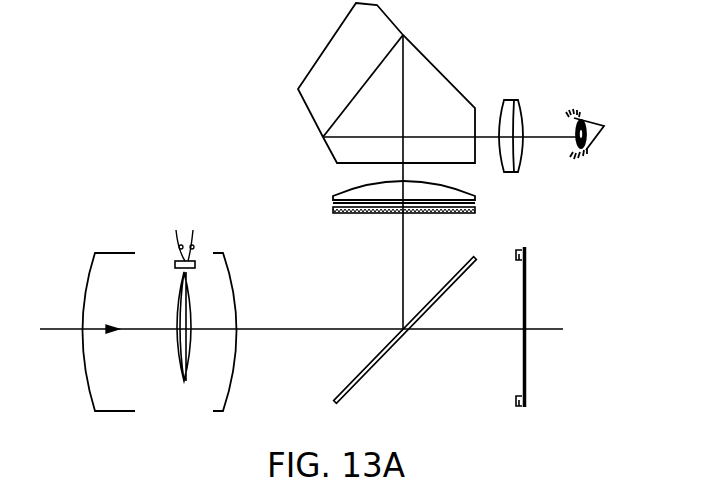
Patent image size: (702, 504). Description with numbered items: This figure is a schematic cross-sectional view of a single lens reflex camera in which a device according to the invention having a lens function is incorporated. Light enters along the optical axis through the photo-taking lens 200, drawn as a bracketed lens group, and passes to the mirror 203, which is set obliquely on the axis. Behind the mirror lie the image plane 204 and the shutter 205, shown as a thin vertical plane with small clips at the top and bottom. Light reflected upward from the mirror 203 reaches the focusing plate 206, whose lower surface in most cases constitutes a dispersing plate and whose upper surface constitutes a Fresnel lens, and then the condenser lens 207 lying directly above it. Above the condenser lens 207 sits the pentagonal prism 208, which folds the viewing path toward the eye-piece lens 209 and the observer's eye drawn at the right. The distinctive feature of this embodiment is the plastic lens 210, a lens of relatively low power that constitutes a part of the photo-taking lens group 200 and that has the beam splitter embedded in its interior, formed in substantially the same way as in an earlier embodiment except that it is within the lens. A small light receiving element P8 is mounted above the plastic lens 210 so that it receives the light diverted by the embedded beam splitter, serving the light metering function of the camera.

The photo-taking lens 200 is at (97, 393).
The mirror 203 is at (352, 391).
The image plane 204 is at (527, 380).
The shutter 205 is at (516, 402).
The focusing plate 206 is at (333, 210).
The condenser lens 207 is at (337, 197).
The pentagonal prism 208 is at (316, 73).
The eye-piece lens 209 is at (512, 100).
The plastic lens 210 is at (178, 375).
The light receiving element P8 is at (198, 263).